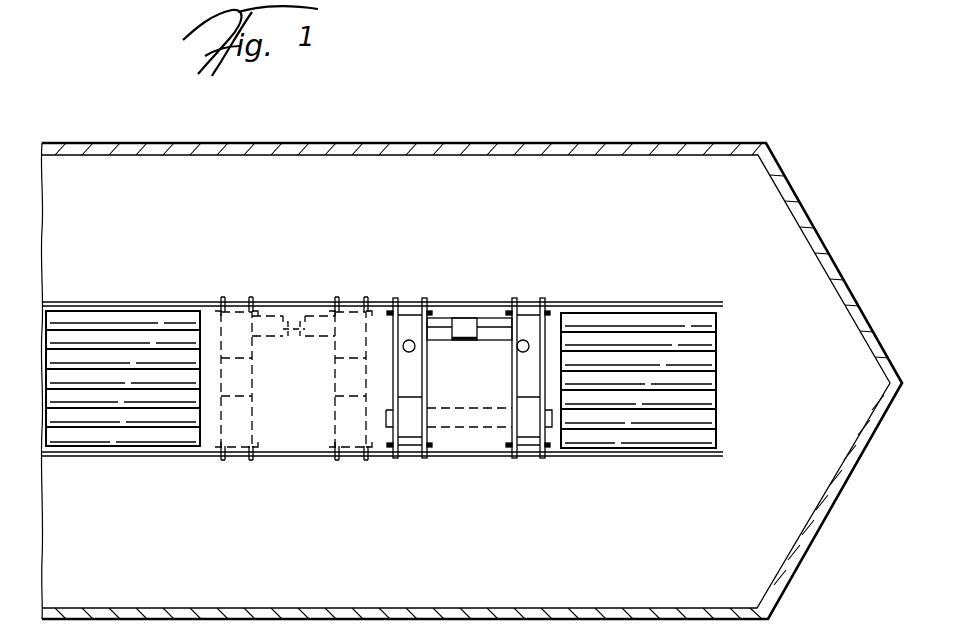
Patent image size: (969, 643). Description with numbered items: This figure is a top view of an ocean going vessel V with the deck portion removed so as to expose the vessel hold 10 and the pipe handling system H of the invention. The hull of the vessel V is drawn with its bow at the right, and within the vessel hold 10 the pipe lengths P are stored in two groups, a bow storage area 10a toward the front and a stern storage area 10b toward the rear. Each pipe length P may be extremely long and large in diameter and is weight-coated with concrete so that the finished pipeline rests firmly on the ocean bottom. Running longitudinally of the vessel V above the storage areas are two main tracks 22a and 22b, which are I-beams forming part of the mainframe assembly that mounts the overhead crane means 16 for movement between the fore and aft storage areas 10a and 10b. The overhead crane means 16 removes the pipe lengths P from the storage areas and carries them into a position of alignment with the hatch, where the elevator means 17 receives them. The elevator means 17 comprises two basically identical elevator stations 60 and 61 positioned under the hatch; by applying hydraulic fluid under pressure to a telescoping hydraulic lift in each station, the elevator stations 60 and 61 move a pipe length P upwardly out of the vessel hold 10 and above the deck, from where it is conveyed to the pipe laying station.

The vessel hold 10 is at (200, 271).
The bow storage area 10a is at (676, 440).
The stern storage area 10b is at (112, 438).
The overhead crane means 16 is at (423, 292).
The elevator means 17 is at (527, 325).
The main track 22a is at (360, 452).
The main track 22b is at (311, 314).
The elevator station 60 is at (410, 352).
The elevator station 61 is at (521, 352).
The pipe handling system H is at (663, 291).
The pipe lengths P is at (708, 398).
The ocean going vessel V is at (790, 178).